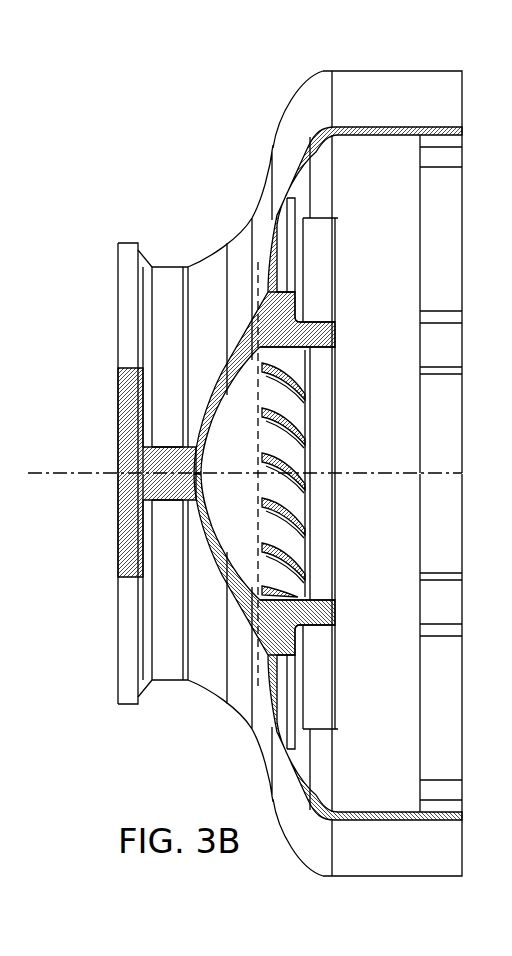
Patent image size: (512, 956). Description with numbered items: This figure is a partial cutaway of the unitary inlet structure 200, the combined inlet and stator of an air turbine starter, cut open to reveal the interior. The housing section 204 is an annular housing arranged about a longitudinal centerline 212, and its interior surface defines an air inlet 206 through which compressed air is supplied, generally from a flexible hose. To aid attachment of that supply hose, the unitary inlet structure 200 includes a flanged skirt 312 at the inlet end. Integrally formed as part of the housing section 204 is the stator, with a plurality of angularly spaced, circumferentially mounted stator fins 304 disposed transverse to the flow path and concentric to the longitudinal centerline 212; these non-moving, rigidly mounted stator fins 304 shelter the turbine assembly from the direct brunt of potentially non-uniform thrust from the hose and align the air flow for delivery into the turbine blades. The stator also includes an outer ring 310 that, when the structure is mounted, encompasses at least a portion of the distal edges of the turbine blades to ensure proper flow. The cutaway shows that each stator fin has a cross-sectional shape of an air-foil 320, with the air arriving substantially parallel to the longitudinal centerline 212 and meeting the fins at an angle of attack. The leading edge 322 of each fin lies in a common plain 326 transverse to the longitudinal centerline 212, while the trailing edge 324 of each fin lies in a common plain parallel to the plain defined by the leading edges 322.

The unitary inlet structure 200 is at (200, 127).
The housing section 204 is at (288, 137).
The air inlet 206 is at (113, 303).
The longitudinal centerline 212 is at (245, 473).
The stator fins 304 is at (300, 367).
The outer ring 310 is at (333, 602).
The flanged skirt 312 is at (133, 243).
The air-foil 320 is at (290, 445).
The leading edge 322 is at (262, 399).
The trailing edge 324 is at (292, 430).
The common plain 326 is at (258, 662).